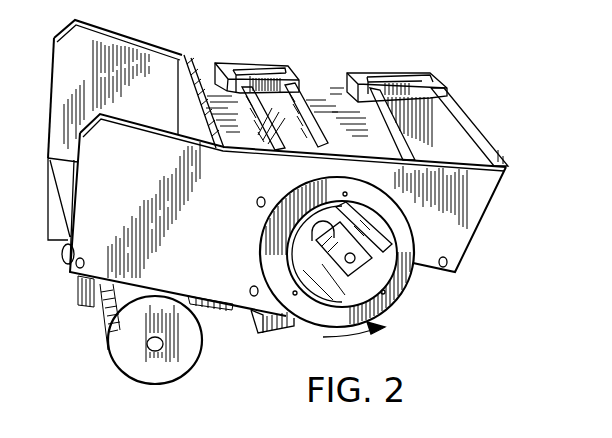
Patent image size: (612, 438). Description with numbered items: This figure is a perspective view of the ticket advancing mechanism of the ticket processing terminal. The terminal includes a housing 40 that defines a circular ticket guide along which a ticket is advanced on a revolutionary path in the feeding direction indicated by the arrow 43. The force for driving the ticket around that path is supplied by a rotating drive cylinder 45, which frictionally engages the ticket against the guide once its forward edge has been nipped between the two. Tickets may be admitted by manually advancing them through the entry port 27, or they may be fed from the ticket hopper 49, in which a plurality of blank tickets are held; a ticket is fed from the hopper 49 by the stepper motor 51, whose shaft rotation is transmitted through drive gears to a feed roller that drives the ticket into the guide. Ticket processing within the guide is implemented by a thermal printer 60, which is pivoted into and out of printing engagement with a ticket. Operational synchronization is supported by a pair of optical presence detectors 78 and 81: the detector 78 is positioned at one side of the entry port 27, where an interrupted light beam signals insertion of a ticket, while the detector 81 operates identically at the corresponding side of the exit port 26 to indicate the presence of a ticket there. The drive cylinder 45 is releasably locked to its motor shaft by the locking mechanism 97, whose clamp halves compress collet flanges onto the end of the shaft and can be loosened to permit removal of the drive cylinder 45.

The exit port 26 is at (459, 140).
The entry port 27 is at (300, 118).
The housing 40 is at (481, 197).
The arrow 43 is at (358, 334).
The drive cylinder 45 is at (383, 271).
The ticket hopper 49 is at (152, 54).
The stepper motor 51 is at (115, 355).
The thermal printer 60 is at (300, 324).
The optical presence detector 78 is at (273, 66).
The optical presence detector 81 is at (407, 74).
The locking mechanism 97 is at (305, 256).